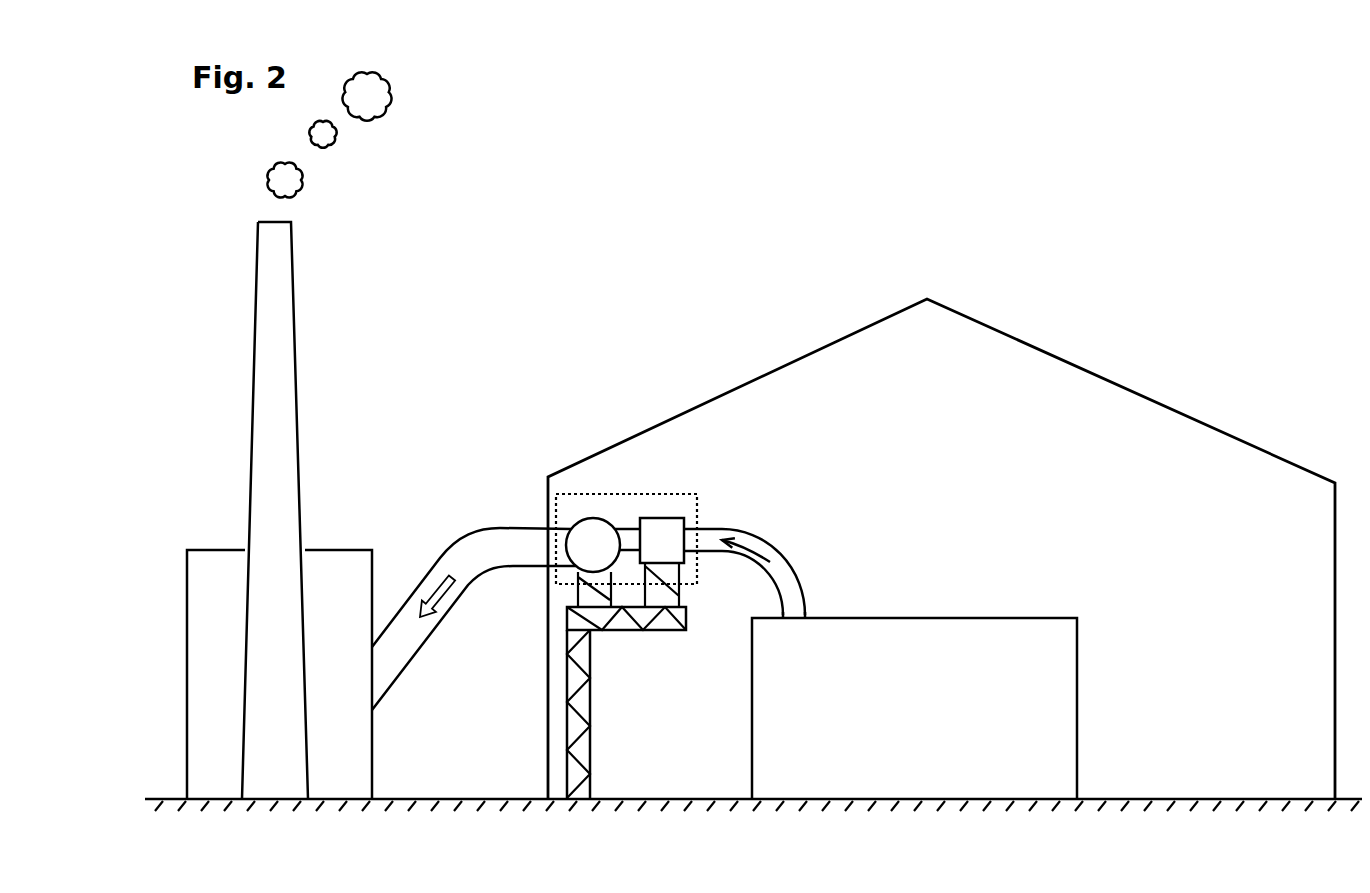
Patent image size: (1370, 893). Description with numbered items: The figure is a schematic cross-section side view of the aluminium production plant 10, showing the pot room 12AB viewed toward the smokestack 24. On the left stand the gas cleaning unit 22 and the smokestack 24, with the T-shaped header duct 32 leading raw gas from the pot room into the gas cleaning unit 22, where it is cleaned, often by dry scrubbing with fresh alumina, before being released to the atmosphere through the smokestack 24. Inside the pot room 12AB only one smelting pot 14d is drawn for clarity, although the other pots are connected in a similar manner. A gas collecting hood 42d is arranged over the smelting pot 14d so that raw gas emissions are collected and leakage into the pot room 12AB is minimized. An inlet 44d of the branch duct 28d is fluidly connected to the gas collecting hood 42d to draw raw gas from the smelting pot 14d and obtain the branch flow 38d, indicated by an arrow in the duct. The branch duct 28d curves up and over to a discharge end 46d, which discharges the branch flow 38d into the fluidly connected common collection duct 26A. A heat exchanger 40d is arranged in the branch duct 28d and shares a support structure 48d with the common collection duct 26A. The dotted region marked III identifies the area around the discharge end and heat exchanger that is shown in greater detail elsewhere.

The aluminium production plant 10 is at (1247, 138).
The smokestack 24 is at (255, 302).
The gas cleaning unit 22 is at (348, 549).
The T-shaped header duct 32 is at (446, 553).
The pot room 12AB is at (1075, 363).
The line III- III is at (648, 482).
The discharge end 46d is at (648, 482).
The common collection duct 26A is at (600, 520).
The heat exchanger 40d is at (636, 500).
The support structure 48d is at (590, 690).
The branch duct 28d is at (772, 540).
The branch flow 38d is at (752, 547).
The inlet 44d is at (797, 608).
The gas collecting hood 42d is at (903, 617).
The smelting pot 14d is at (933, 649).